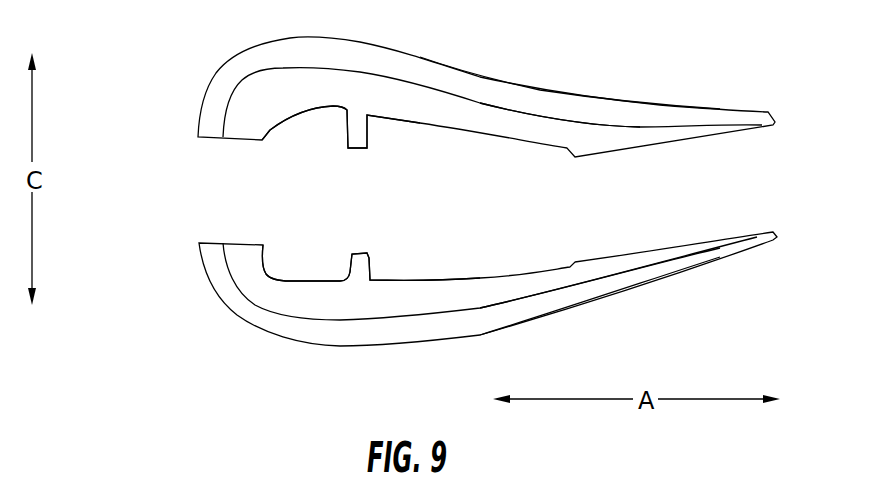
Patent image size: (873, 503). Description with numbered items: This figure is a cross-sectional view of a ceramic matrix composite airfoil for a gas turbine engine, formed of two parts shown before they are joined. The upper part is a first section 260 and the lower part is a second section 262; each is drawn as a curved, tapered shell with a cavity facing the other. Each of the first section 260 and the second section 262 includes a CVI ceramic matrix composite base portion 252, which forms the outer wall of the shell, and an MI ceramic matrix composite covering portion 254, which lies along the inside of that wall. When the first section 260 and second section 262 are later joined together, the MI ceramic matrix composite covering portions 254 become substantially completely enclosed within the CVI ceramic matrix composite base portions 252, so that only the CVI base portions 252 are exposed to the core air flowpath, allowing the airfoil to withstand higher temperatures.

The first section 260 is at (180, 74).
The second section 262 is at (198, 278).
The CVI ceramic matrix composite base portion 252 is at (550, 103).
The MI ceramic matrix composite covering portion 254 is at (418, 107).